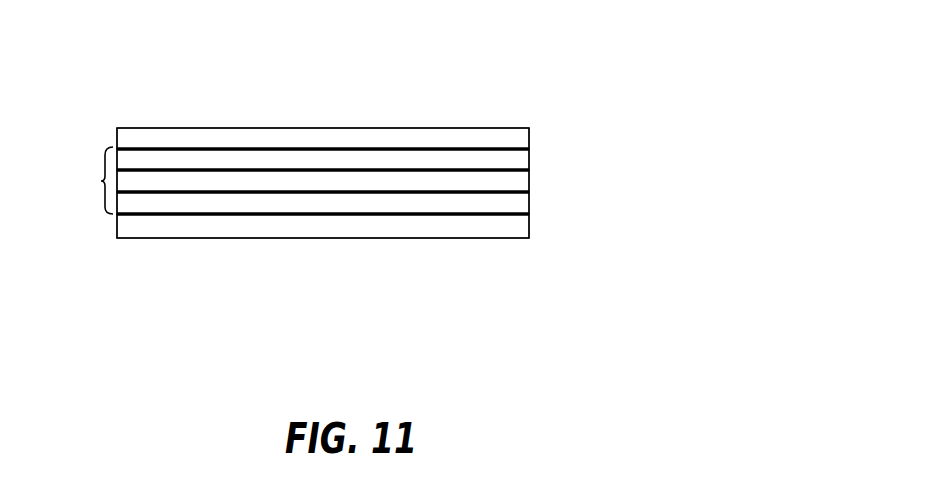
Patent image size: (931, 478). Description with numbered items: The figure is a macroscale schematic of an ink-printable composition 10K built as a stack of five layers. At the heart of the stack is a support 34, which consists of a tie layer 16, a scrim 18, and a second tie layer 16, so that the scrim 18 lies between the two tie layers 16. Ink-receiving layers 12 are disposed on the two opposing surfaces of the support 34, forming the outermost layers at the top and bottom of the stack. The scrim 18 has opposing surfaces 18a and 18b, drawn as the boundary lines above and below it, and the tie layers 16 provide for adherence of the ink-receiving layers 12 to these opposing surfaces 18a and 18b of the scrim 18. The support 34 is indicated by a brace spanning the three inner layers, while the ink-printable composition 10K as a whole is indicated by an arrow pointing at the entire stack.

The ink-printable composition 10K is at (743, 177).
The ink-receiving layer 12 is at (477, 127).
The tie layer 16 is at (529, 159).
The scrim 18 is at (529, 178).
The surface of scrim 18a is at (305, 168).
The surface of scrim 18b is at (347, 192).
The support 34 is at (93, 183).